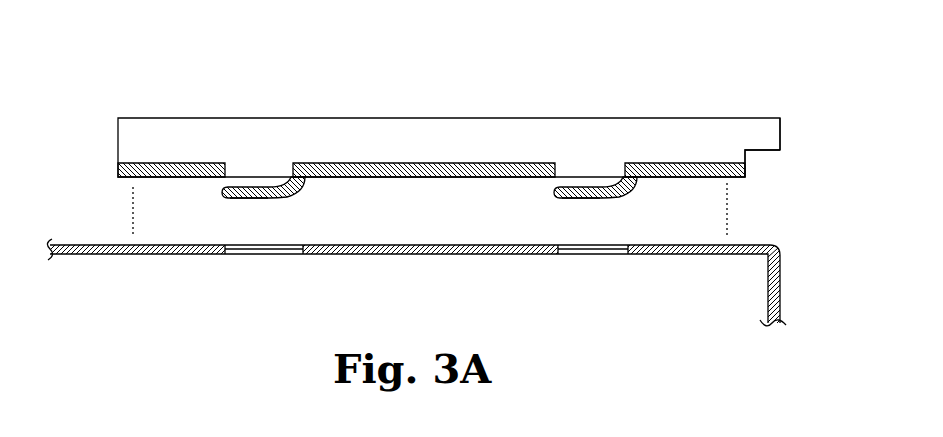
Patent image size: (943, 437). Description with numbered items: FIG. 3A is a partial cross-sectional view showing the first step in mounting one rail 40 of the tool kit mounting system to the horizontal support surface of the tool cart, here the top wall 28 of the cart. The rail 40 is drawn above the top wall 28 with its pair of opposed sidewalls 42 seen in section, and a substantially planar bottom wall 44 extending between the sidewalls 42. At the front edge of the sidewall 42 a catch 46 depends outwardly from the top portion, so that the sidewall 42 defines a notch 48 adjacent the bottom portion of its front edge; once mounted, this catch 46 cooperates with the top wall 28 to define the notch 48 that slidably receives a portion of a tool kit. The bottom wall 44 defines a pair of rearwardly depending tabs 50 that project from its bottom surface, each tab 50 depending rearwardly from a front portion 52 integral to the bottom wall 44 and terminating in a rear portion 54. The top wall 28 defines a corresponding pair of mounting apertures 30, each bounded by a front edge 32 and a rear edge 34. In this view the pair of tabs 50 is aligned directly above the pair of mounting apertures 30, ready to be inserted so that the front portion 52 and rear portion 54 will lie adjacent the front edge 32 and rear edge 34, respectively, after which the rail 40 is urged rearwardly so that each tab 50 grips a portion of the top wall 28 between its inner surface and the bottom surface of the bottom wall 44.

The top wall 28 is at (85, 245).
The mounting aperture 30 is at (267, 264).
The front edge 32 is at (292, 257).
The rear edge 34 is at (235, 257).
The rail 40 is at (467, 127).
The sidewall 42 is at (449, 137).
The bottom wall 44 is at (147, 162).
The catch 46 is at (782, 137).
The notch 48 is at (775, 160).
The tab 50 is at (426, 209).
The front portion 52 is at (305, 183).
The rear portion 54 is at (228, 190).